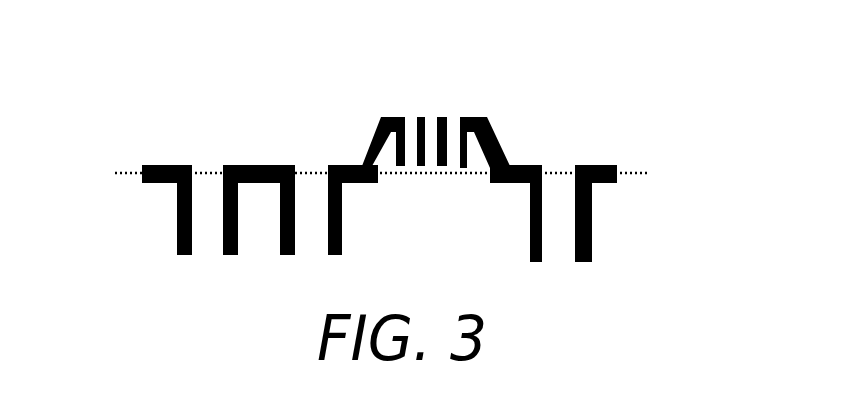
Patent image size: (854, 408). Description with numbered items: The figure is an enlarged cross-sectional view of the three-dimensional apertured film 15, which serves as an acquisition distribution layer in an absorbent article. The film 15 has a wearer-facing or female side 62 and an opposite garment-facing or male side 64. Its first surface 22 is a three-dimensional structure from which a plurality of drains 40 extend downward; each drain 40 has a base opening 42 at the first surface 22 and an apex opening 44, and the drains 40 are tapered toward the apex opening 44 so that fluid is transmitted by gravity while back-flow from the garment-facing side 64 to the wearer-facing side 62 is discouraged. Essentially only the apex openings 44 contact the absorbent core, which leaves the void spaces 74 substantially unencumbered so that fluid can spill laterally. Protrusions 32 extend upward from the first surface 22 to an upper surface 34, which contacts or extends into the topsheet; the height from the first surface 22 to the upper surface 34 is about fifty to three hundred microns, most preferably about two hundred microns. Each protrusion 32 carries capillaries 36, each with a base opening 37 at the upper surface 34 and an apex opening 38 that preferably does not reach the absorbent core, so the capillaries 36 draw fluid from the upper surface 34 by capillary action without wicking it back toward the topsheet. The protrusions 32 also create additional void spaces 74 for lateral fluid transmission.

The three-dimensional film 15 is at (594, 66).
The first surface 22 is at (253, 165).
The protrusion 32 is at (493, 135).
The upper surface 34 is at (477, 117).
The capillary 36 is at (455, 158).
The base opening 37 is at (378, 135).
The apex opening 38 is at (370, 158).
The drain 40 is at (208, 227).
The base opening 42 is at (177, 190).
The apex opening 44 is at (177, 252).
The wearer-facing side 62 is at (185, 106).
The garment-facing side 64 is at (196, 308).
The void space 74 is at (260, 240).